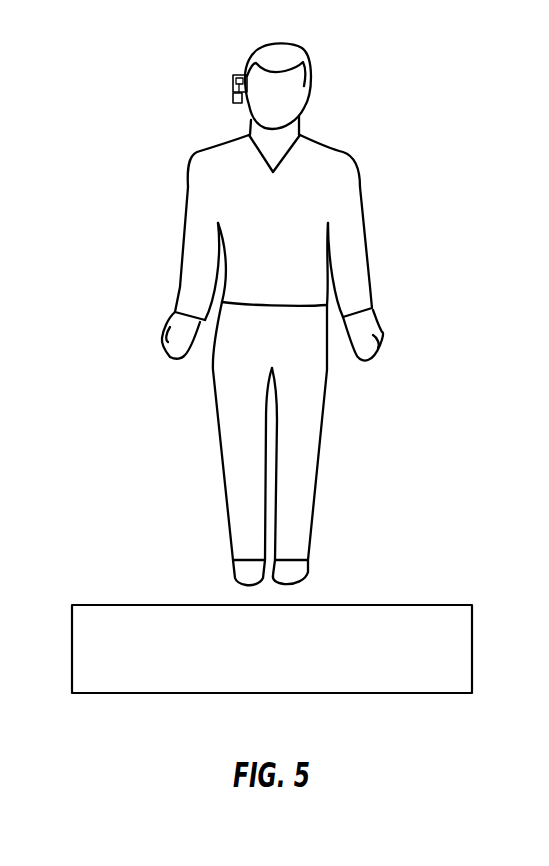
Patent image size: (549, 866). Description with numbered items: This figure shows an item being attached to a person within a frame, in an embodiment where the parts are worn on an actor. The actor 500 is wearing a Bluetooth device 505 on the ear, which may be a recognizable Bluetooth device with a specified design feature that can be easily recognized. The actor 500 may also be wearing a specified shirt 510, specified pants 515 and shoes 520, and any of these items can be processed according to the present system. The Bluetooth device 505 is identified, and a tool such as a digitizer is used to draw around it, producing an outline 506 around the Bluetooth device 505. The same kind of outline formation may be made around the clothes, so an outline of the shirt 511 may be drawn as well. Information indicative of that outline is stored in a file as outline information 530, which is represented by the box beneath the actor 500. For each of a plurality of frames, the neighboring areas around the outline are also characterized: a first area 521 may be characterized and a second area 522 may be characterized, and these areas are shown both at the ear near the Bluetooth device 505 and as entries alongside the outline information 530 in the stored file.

The actor 500 is at (313, 70).
The Bluetooth device 505 is at (237, 77).
The outline 506 is at (240, 77).
The shirt 510 is at (305, 275).
The outline of the shirt 511 is at (372, 305).
The pants 515 is at (297, 525).
The shoes 520 is at (308, 573).
The first area 521 is at (233, 98).
The second area 522 is at (233, 85).
The outline information 530 is at (135, 670).